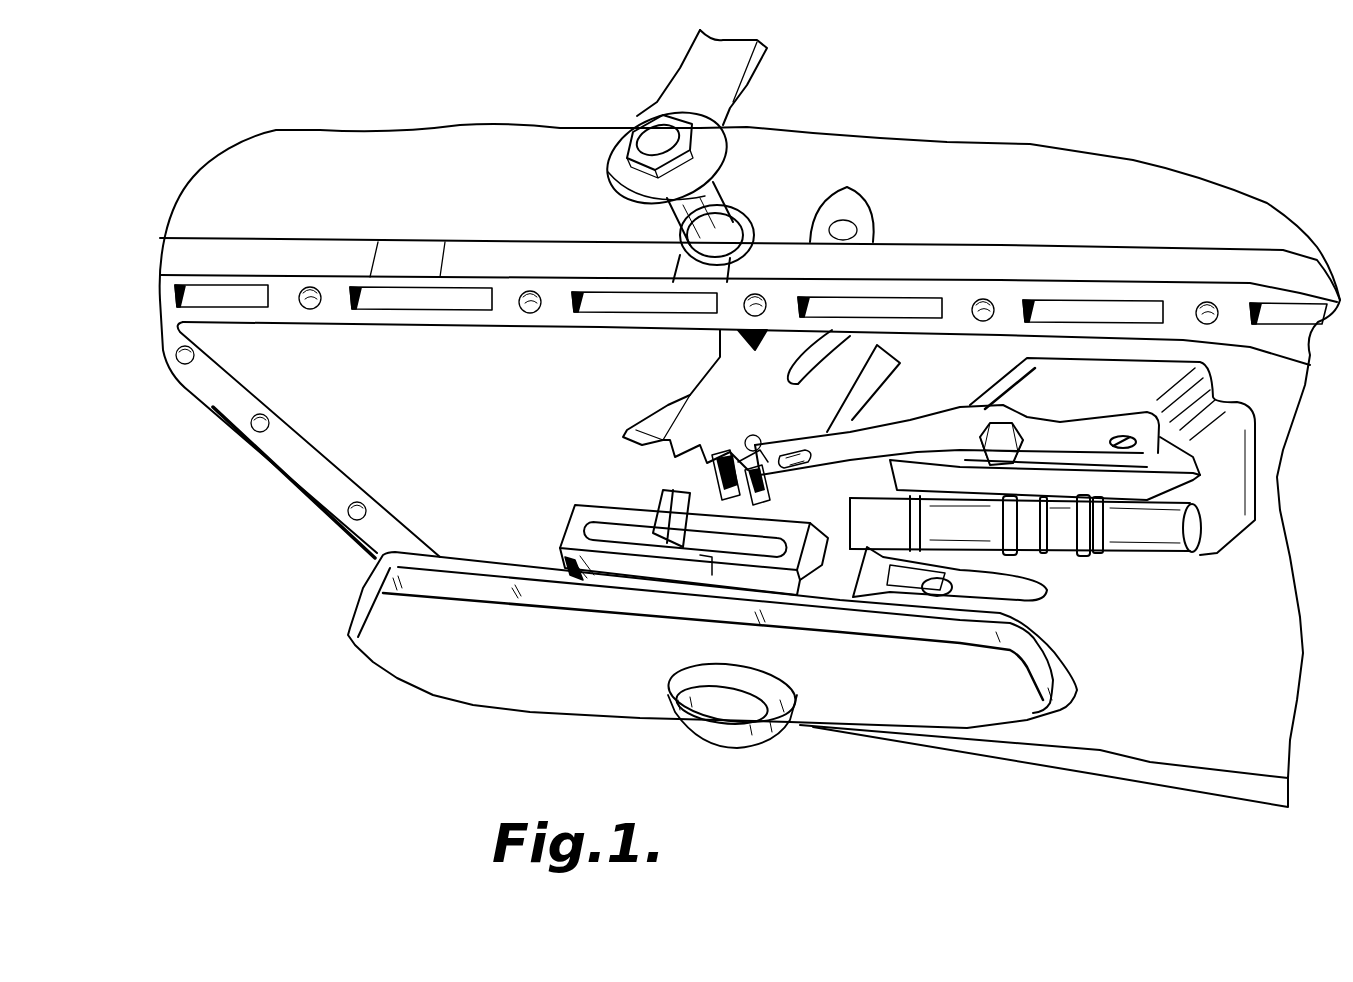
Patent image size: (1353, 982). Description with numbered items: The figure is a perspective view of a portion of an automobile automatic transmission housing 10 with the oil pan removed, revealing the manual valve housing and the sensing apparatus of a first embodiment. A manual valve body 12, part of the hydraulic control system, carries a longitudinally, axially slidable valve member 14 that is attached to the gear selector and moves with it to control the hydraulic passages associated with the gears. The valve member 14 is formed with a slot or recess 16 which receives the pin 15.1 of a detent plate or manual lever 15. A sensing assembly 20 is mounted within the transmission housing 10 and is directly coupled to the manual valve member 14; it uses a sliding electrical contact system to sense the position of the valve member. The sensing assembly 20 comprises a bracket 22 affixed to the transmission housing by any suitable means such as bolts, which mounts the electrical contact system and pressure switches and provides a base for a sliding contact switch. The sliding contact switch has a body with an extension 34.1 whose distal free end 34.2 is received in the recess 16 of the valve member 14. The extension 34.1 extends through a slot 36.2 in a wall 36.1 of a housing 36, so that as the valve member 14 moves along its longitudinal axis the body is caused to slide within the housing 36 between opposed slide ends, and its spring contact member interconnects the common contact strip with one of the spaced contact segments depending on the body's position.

The transmission housing 10 is at (1048, 176).
The manual valve body 12 is at (1069, 552).
The valve member 14 is at (900, 479).
The detent plate or manual lever 15 is at (720, 356).
The pin 15.1 is at (733, 445).
The slot or recess 16 is at (715, 500).
The sensing assembly 20 is at (568, 524).
The bracket 22 is at (963, 585).
The extension 34.1 is at (660, 510).
The distal free end 34.2 is at (823, 540).
The housing 36 is at (652, 570).
The wall 36.1 is at (712, 557).
The slot 36.2 is at (596, 538).